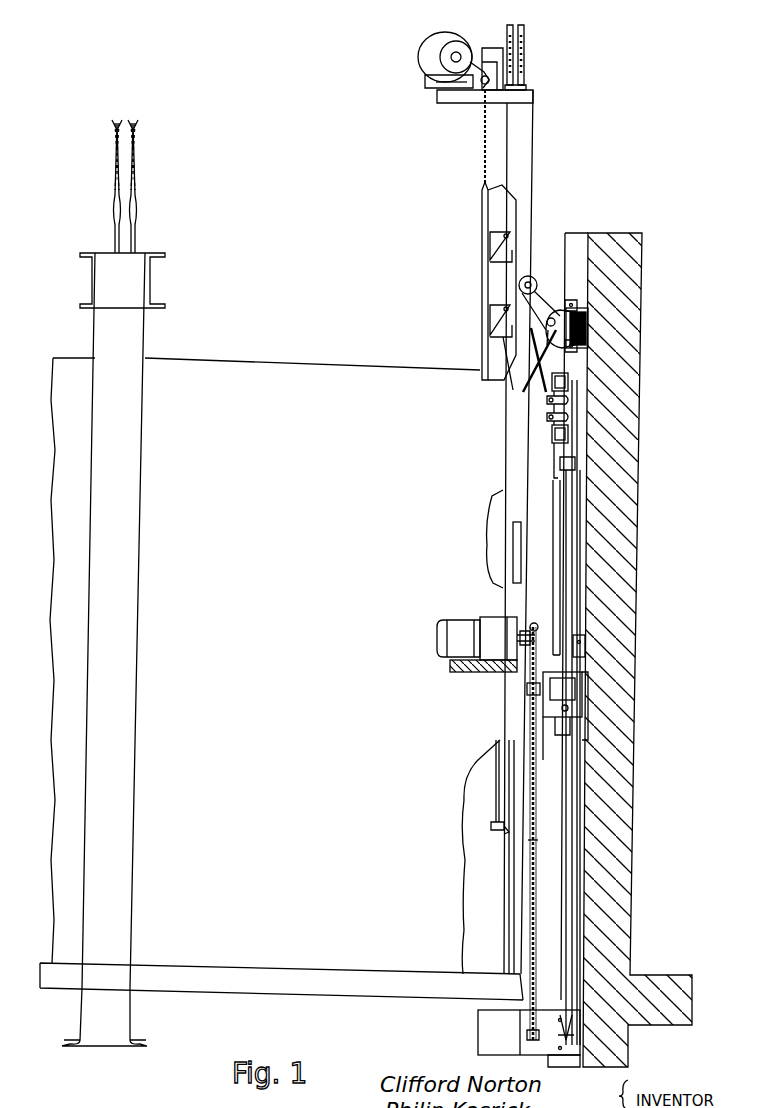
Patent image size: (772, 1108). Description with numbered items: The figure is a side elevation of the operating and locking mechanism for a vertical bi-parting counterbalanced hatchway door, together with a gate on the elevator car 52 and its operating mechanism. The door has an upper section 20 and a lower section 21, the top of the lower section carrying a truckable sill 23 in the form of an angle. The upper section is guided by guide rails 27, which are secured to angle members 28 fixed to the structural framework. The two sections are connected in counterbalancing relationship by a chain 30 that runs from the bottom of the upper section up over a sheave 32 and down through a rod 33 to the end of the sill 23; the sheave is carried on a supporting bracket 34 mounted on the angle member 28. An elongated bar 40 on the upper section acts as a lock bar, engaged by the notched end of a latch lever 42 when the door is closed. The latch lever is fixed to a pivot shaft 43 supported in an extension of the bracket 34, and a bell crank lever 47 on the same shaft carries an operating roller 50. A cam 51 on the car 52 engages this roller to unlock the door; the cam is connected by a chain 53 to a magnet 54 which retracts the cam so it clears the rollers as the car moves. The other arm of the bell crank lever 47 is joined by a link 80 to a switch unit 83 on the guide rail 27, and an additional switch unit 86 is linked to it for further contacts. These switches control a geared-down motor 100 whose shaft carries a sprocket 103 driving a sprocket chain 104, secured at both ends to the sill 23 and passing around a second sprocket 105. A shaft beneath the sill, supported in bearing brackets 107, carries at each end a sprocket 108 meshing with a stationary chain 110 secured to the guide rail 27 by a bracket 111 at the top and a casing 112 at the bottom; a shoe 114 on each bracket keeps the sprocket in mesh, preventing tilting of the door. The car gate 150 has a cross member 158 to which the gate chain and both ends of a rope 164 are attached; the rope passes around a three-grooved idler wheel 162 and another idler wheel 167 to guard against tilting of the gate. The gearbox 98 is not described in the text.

The upper section 20 is at (560, 533).
The lower section 21 is at (564, 889).
The truckable sill 23 is at (542, 695).
The guide rails 27 is at (568, 232).
The angle members 28 is at (592, 232).
The chain 30 is at (563, 576).
The sheave 32 is at (588, 325).
The rod 33 is at (577, 497).
The supporting bracket 34 is at (575, 293).
The elongated bar 40 is at (557, 498).
The latch lever 42 is at (538, 383).
The pivot shaft 43 is at (553, 316).
The bell crank lever 47 is at (562, 299).
The operating roller 50 is at (532, 281).
The cam 51 is at (522, 232).
The elevator car 52 is at (290, 618).
The chain 53 is at (483, 152).
The magnet 54 is at (443, 40).
The link 80 is at (536, 430).
The switch unit 83 is at (560, 382).
The additional switch unit 86 is at (560, 434).
The gear box 98 is at (490, 618).
The motor 100 is at (453, 620).
The sprocket 103 is at (537, 630).
The sprocket chain 104 is at (530, 819).
The sprocket 105 is at (527, 1036).
The bearing brackets 107 is at (565, 721).
The sprocket 108 is at (560, 746).
The stationary chain 110 is at (574, 847).
The bracket 111 is at (580, 634).
The casing 112 is at (485, 1023).
The shoe 114 is at (582, 723).
The gate 150 is at (507, 897).
The cross member 158 is at (502, 831).
The idler wheel 162 is at (527, 36).
The rope 164 is at (497, 801).
The idler wheel 167 is at (507, 27).